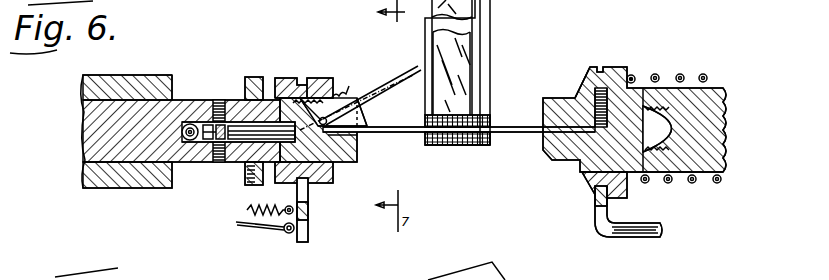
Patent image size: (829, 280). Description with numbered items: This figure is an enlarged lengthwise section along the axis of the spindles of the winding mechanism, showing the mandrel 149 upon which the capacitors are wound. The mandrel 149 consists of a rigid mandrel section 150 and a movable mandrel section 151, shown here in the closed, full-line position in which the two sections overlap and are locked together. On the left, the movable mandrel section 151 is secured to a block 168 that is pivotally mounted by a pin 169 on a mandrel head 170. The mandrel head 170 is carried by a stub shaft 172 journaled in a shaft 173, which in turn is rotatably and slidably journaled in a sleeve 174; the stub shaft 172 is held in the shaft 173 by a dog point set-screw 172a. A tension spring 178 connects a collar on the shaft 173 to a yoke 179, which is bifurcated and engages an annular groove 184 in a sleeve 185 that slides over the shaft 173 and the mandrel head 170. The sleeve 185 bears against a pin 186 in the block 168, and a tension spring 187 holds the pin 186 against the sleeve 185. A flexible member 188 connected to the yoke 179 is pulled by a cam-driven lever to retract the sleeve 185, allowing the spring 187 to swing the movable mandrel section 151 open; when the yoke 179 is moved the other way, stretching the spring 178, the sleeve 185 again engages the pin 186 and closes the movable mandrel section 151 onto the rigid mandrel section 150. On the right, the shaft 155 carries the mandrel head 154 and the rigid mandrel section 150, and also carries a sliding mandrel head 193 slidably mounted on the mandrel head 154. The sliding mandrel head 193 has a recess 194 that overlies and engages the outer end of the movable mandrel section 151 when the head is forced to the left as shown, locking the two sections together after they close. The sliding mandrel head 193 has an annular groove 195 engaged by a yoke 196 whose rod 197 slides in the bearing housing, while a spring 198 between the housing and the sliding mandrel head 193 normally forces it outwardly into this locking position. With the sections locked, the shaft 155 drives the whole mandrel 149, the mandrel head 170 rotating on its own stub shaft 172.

The mandrel 149 is at (418, 142).
The rigid mandrel section 150 is at (508, 155).
The movable mandrel section 151 is at (397, 127).
The mandrel head 154 is at (568, 172).
The shaft 155 is at (718, 184).
The block 168 is at (350, 90).
The pin 169 is at (357, 140).
The mandrel head 170 is at (347, 167).
The stub shaft 172 is at (245, 166).
The dog point set-screw 172a is at (220, 98).
The shaft 173 is at (190, 172).
The sleeve 174 is at (125, 190).
The tension spring 178 is at (250, 212).
The yoke 179 is at (309, 213).
The annular groove 184 is at (300, 78).
The sleeve 185 is at (327, 78).
The pin 186 is at (346, 92).
The tension spring 187 is at (295, 127).
The flexible member 188 is at (280, 234).
The sliding mandrel head 193 is at (626, 68).
The recess 194 is at (557, 98).
The annular groove 195 is at (602, 66).
The yoke 196 is at (596, 206).
The rod 197 is at (609, 240).
The spring 198 is at (682, 74).